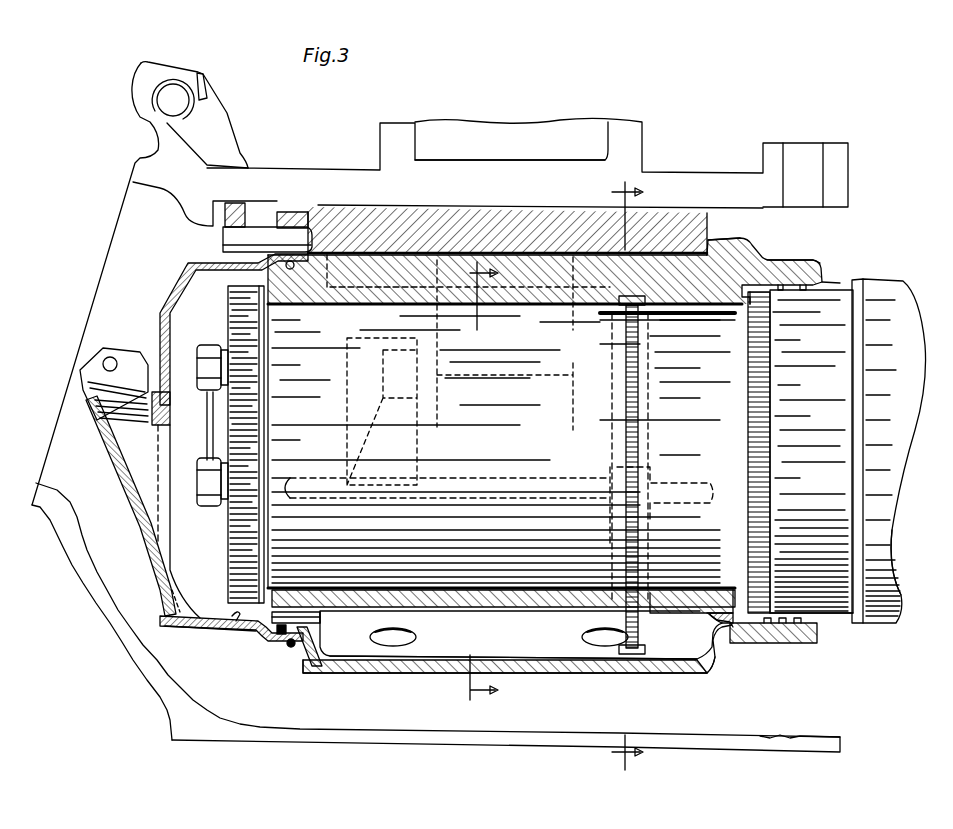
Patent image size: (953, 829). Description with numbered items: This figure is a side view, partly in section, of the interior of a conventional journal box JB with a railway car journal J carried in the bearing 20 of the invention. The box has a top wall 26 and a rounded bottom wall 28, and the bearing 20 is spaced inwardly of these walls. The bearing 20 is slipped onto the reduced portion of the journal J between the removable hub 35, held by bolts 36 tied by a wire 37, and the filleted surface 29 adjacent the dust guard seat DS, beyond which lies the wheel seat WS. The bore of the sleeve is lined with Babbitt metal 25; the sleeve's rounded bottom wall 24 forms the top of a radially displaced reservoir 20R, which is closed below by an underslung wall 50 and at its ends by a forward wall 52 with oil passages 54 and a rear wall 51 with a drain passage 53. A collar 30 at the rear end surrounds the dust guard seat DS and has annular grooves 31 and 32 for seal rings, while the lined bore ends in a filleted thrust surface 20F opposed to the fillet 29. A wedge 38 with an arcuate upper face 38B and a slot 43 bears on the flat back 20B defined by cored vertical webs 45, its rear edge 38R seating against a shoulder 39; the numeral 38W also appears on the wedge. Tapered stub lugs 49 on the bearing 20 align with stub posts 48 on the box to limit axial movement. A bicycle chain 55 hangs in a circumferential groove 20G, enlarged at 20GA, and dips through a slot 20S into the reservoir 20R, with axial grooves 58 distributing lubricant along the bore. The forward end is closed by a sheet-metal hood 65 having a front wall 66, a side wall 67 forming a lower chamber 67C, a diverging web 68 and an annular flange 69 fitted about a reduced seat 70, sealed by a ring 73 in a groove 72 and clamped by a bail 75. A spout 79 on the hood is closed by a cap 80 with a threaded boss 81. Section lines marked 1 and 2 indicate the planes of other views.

The rounded bottom wall 28 is at (142, 688).
The journal box JB is at (283, 160).
The top wall 26 is at (637, 130).
The wedge 38 is at (666, 218).
The opening or slot 43 is at (252, 214).
The upper face 38B is at (318, 209).
The wall 38W is at (352, 252).
The flat back 20B is at (443, 253).
The vertical webs or columns 45 is at (554, 270).
The rear edge 38R is at (712, 250).
The shoulder 39 is at (712, 252).
The annular groove 72 is at (299, 308).
The Babbitt metal lining 25 is at (320, 308).
The section line 2 is at (482, 489).
The section line 1 is at (620, 478).
The web 68 is at (258, 257).
The hood or cap 65 is at (163, 300).
The front wall 66 is at (160, 326).
The spout 79 is at (122, 480).
The side wall 67 is at (210, 628).
The chamber 67C is at (237, 626).
The annular flange 69 is at (278, 640).
The cap 80 is at (92, 375).
The boss 81 is at (130, 416).
The bolts 36 is at (206, 345).
The wire 37 is at (207, 418).
The removable hub 35 is at (230, 525).
The bottom wall 24 is at (483, 596).
The tapered stub lugs 49 is at (383, 366).
The stub posts or columns 48 is at (573, 375).
The axial distributing passages 58 is at (478, 476).
The enlarged portions of the groove 20GA is at (652, 496).
The circumferential groove 20G is at (622, 312).
The chain lubricator 55 is at (640, 442).
The filleted thrust surface 20F is at (750, 314).
The annular groove 31 is at (808, 290).
The wheel seat WS is at (886, 270).
The dust guard seat DS is at (838, 283).
The collar 30 is at (805, 256).
The journal J is at (885, 545).
The underslung bottom wall 50 is at (364, 676).
The reservoir 20R is at (500, 680).
The bearing 20 is at (578, 680).
The oil passages 54 is at (322, 617).
The reduced portion 70 is at (321, 636).
The forward end wall 52 is at (312, 654).
The sealing ring 73 is at (283, 637).
The bail 75 is at (291, 649).
The slot 20S is at (655, 603).
The filleted surface 29 is at (742, 627).
The oil passage 53 is at (728, 622).
The rear end wall 51 is at (712, 650).
The annular groove 32 is at (783, 614).